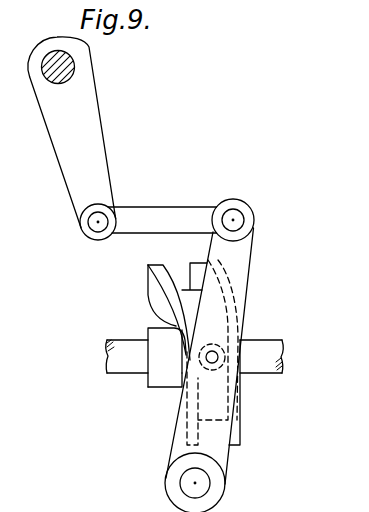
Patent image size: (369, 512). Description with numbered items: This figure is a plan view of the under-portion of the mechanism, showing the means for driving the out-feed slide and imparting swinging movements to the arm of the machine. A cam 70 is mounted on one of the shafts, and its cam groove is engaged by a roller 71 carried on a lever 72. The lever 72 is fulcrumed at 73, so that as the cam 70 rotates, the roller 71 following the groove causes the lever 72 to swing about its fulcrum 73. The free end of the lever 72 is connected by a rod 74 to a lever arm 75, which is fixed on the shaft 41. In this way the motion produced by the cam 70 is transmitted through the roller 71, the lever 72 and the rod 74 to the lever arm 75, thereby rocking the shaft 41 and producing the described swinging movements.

The shaft 41 is at (72, 62).
The lever arm 75 is at (64, 162).
The rod 74 is at (153, 208).
The lever 72 is at (240, 280).
The cam 70 is at (178, 302).
The roller 71 is at (215, 370).
The fulcrum 73 is at (207, 478).